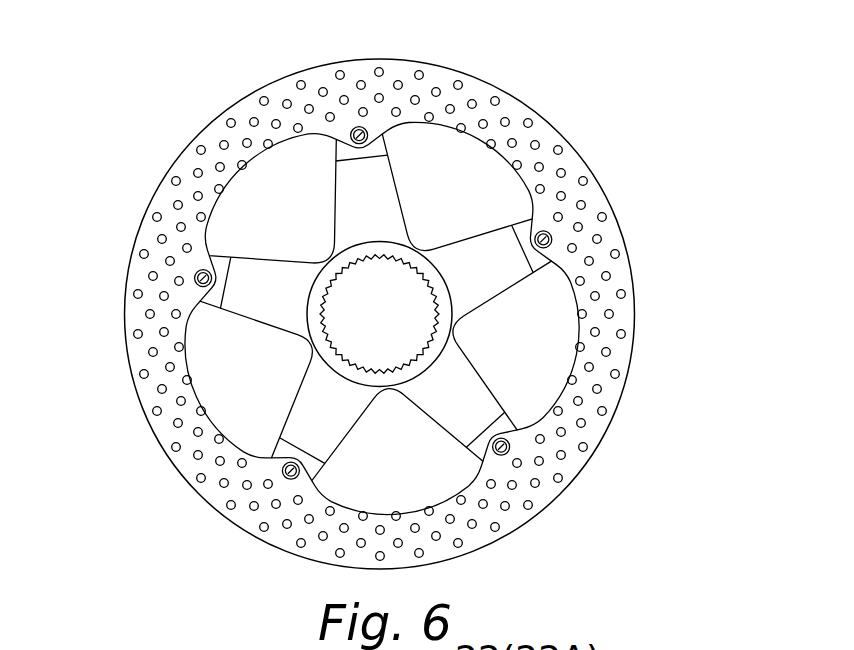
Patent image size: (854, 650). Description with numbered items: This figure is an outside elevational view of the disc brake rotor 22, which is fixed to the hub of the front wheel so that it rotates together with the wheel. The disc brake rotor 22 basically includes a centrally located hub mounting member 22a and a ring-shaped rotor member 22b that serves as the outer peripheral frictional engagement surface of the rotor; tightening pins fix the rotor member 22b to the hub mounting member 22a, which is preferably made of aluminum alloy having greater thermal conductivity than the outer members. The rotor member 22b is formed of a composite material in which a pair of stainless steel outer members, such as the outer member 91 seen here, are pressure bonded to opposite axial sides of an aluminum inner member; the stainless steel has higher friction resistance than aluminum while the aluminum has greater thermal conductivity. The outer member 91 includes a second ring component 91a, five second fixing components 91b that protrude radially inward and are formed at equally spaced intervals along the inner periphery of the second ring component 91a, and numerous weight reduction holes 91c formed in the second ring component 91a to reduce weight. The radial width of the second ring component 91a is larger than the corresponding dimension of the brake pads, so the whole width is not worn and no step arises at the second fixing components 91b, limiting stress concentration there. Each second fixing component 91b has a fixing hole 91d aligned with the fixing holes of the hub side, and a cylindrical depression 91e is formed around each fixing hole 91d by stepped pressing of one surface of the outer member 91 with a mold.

The disc brake rotor 22 is at (128, 168).
The hub mounting member 22a is at (294, 376).
The ring-shaped rotor member 22b is at (150, 428).
The outer (second) member 91 is at (618, 182).
The second ring component 91a is at (543, 133).
The second fixing component 91b is at (352, 132).
The weight reduction hole 91c is at (540, 455).
The fixing hole 91d is at (374, 128).
The cylindrical depression 91e is at (600, 295).